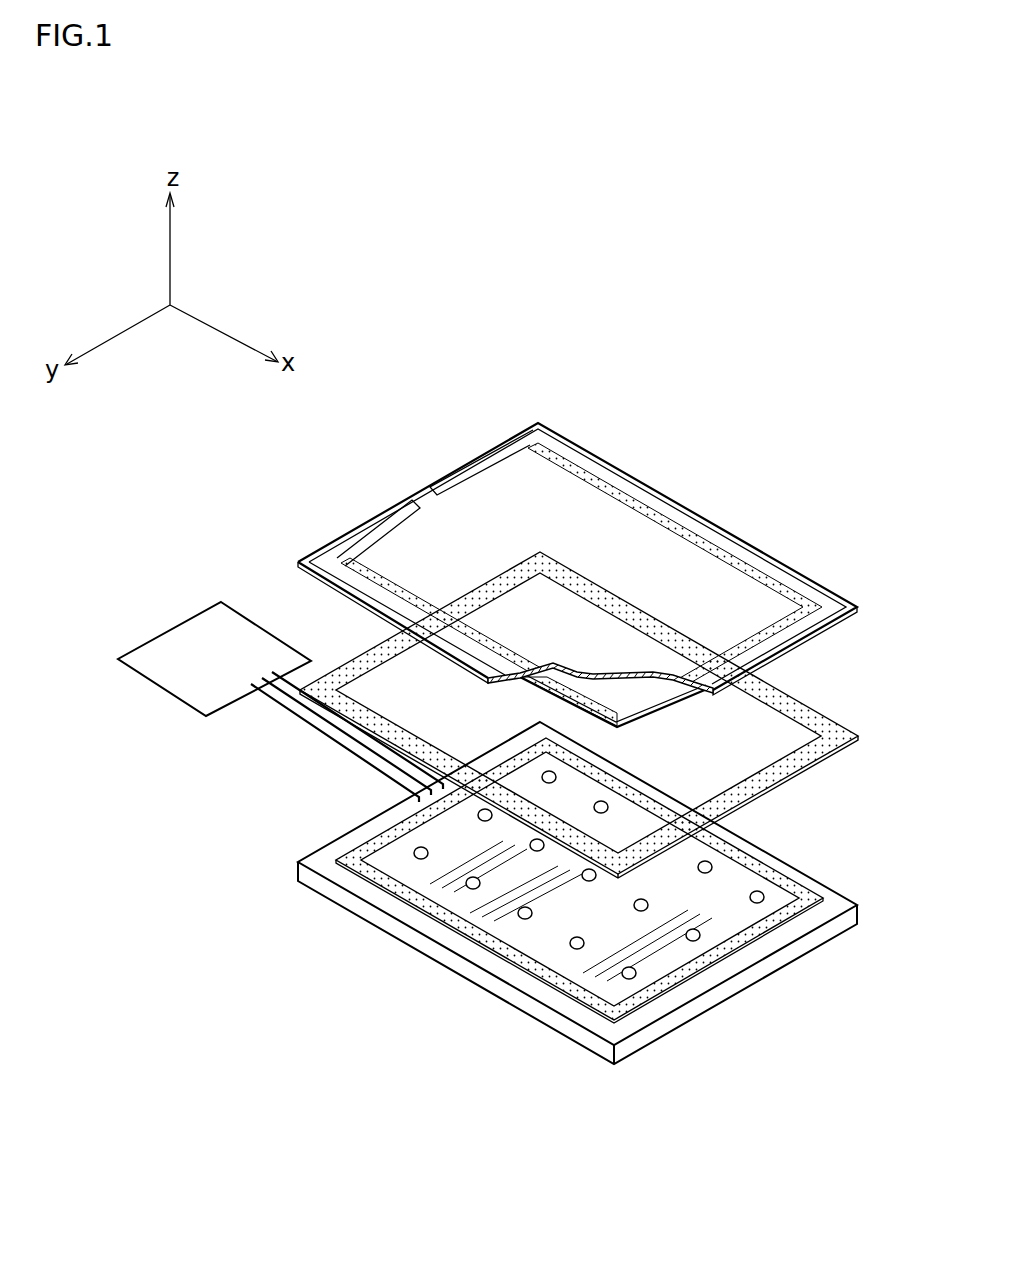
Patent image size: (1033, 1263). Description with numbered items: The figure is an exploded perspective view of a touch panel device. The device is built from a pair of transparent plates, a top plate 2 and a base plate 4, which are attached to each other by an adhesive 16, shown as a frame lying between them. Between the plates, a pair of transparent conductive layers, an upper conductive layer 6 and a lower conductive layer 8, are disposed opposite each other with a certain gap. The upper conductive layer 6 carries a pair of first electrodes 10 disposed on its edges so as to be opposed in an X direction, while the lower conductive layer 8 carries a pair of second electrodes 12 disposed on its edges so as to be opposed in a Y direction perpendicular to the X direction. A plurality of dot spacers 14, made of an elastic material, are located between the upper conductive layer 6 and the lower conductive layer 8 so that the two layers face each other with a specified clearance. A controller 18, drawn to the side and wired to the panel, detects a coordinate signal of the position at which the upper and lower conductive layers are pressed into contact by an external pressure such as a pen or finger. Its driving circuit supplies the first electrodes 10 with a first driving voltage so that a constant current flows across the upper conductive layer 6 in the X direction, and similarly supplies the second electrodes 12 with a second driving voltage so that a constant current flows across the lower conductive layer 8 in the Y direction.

The top plate 2 is at (594, 458).
The base plate 4 is at (325, 902).
The upper conductive layer 6 is at (647, 699).
The lower conductive layer 8 is at (527, 960).
The first electrodes 10 is at (569, 688).
The second electrodes 12 is at (823, 892).
The dot spacers 14 is at (757, 891).
The adhesive 16 is at (826, 711).
The controller 18 is at (198, 671).